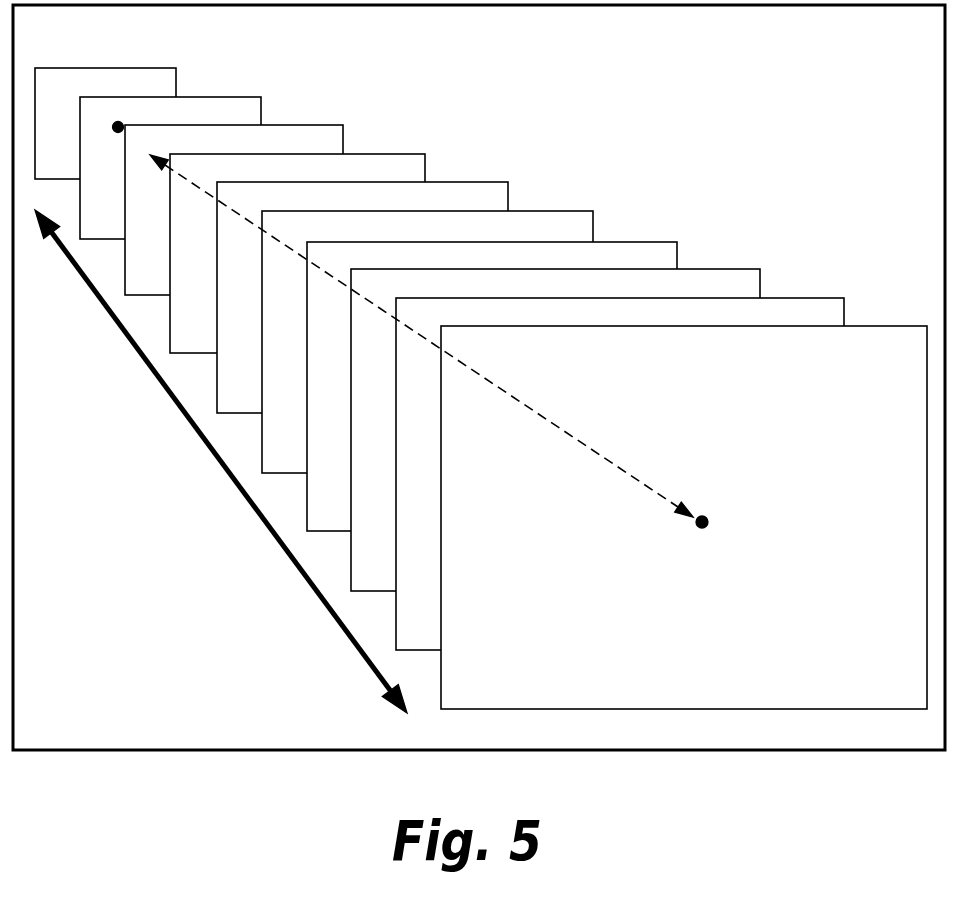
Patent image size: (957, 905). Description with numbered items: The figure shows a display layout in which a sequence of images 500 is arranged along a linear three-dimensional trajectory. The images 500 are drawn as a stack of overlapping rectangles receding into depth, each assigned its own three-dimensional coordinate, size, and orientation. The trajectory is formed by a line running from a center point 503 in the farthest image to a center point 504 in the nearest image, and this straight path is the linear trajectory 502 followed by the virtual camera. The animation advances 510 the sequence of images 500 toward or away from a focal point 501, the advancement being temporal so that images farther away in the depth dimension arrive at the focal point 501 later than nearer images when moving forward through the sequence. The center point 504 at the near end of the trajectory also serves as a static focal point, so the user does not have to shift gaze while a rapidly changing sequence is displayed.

The images 500 is at (515, 222).
The focal point 501 is at (684, 517).
The linear trajectory 502 is at (573, 437).
The center point 503 is at (118, 127).
The center point 504 is at (703, 518).
The advance 510 is at (187, 423).